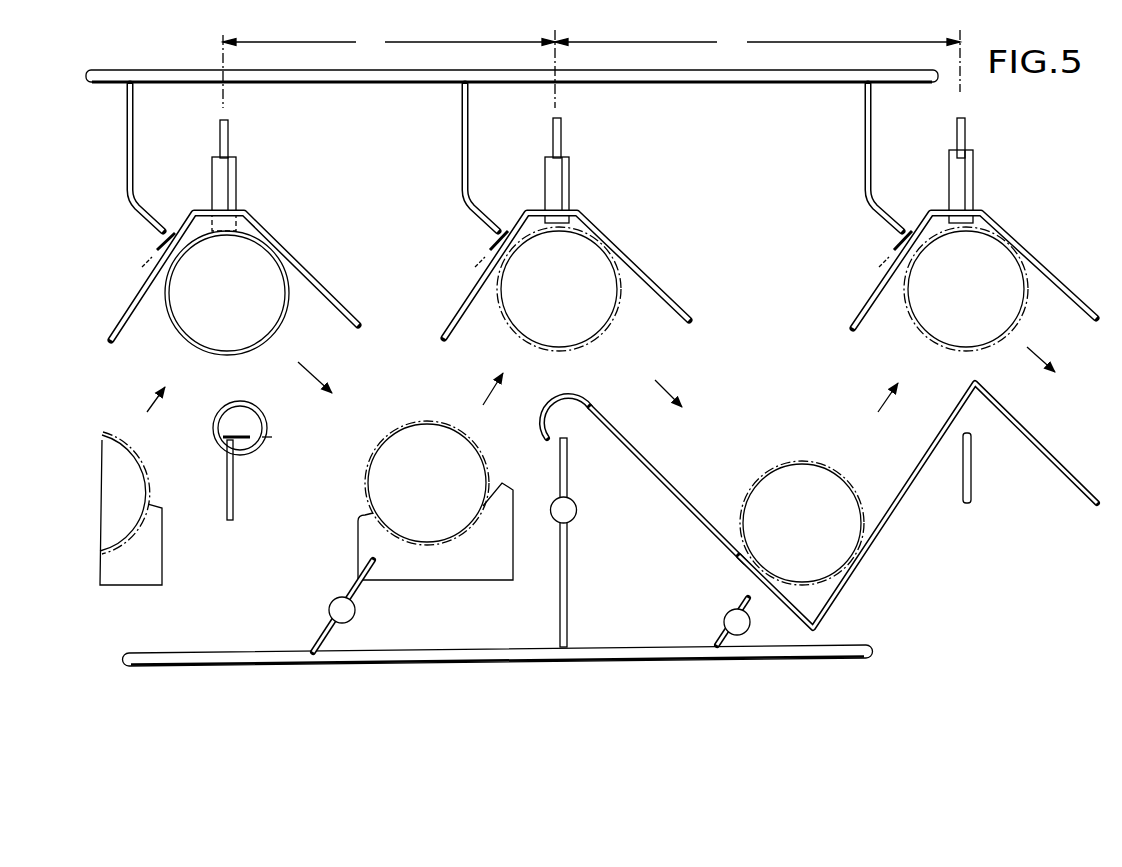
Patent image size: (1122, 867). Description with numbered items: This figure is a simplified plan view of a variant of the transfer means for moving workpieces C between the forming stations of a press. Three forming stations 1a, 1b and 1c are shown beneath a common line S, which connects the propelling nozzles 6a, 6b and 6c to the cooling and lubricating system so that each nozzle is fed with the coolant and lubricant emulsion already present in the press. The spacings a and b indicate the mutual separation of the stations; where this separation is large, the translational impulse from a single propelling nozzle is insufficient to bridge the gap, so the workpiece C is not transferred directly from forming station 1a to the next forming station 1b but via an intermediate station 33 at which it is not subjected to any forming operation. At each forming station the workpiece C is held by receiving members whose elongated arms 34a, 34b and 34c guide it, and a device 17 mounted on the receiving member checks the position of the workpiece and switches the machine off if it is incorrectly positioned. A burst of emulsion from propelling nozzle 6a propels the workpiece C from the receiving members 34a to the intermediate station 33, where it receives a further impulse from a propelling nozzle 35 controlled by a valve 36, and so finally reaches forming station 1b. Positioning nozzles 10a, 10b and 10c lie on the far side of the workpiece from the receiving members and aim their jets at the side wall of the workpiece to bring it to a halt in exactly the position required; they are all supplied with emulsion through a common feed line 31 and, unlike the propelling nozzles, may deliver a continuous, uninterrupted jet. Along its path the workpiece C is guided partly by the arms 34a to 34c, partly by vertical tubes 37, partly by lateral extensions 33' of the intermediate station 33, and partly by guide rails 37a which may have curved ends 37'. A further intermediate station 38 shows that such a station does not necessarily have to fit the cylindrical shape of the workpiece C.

The common line S is at (173, 68).
The spacing distance a is at (389, 68).
The spacing distance b is at (757, 60).
The propelling nozzle 6a is at (131, 150).
The propelling nozzle 6b is at (466, 148).
The propelling nozzle 6c is at (869, 155).
The device 17 is at (228, 175).
The receiving member 34a is at (257, 232).
The receiving member arm 34b is at (632, 260).
The receiving member arm 34c is at (1023, 242).
The forming station 1a is at (213, 300).
The forming station 1b is at (545, 293).
The container 1c is at (952, 293).
The workpiece C is at (250, 350).
The vertical tube 37 is at (259, 427).
The positioning nozzle 10a is at (233, 485).
The intermediate station 33 is at (306, 524).
The lateral extension 33' is at (526, 491).
The common feed line 31 is at (245, 655).
The propelling nozzle 35 is at (371, 560).
The valve 36 is at (331, 599).
The positioning nozzle 10b is at (567, 550).
The curved end 37' is at (553, 408).
The guide rail 37a is at (647, 450).
The further intermediate station 38 is at (788, 592).
The positioning nozzle 10c is at (972, 487).